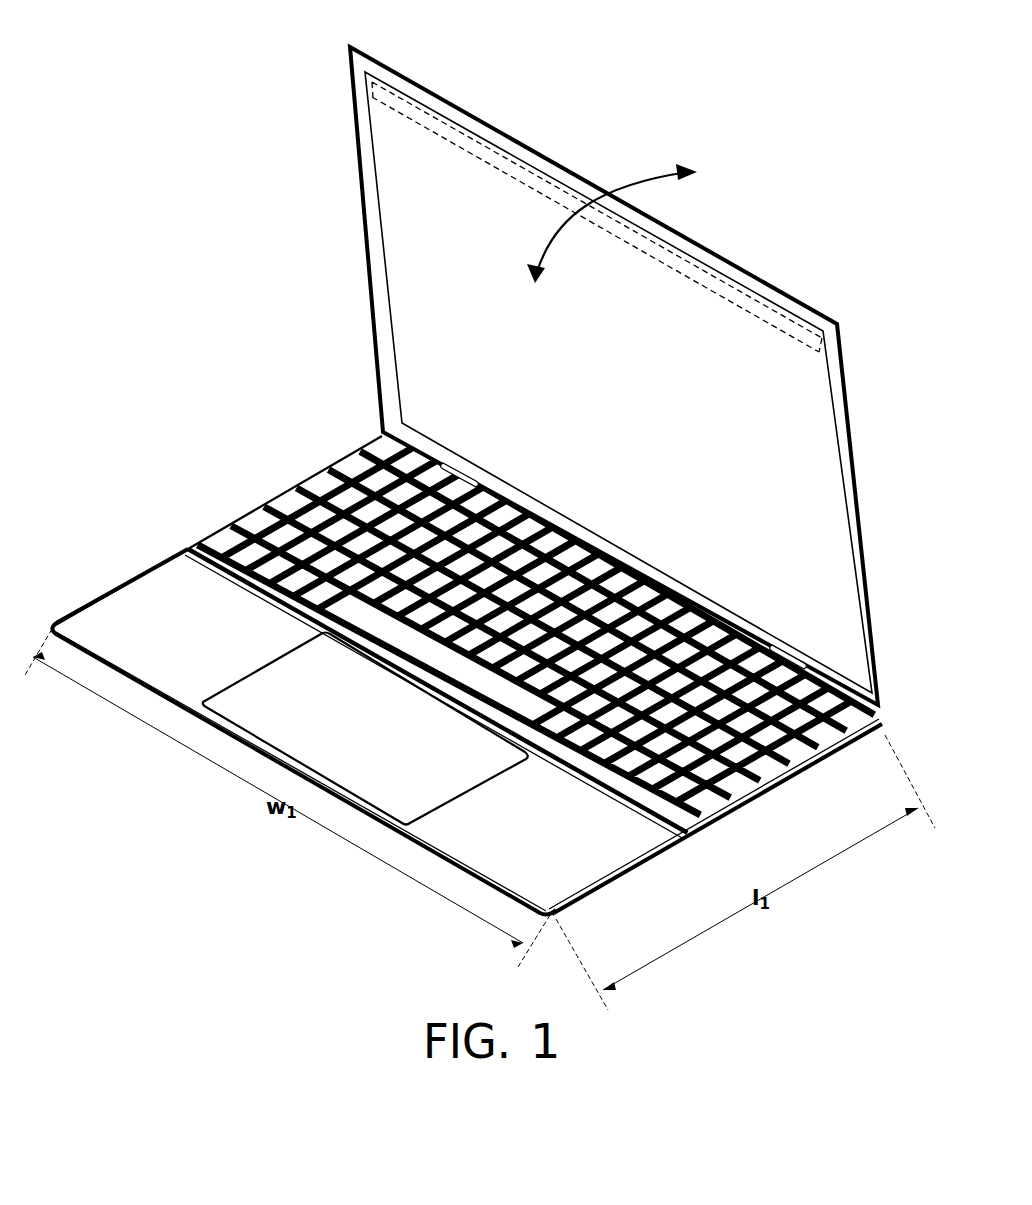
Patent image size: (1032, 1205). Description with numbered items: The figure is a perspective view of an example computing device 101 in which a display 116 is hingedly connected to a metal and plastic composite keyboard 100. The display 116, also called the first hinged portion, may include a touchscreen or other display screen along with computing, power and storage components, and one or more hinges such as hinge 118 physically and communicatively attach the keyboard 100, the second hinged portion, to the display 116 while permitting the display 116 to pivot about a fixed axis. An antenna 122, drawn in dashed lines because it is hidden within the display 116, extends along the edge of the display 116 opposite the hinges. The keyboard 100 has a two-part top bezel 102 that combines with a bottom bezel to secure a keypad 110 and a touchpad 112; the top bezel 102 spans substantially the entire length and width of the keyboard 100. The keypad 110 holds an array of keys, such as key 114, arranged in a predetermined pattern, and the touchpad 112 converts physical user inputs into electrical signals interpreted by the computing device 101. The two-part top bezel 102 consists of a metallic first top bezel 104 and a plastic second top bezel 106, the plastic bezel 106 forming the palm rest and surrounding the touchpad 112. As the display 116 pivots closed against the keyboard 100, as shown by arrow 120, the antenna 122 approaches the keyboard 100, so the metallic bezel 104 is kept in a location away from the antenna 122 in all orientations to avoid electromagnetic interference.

The metal and plastic composite keyboard 100 is at (190, 470).
The computing device 101 is at (191, 200).
The two-part top bezel 102 is at (178, 528).
The metallic first top bezel 104 is at (693, 836).
The plastic second top bezel 106 is at (210, 640).
The keypad 110 is at (549, 640).
The touchpad 112 is at (384, 735).
The key 114 is at (753, 767).
The display 116 is at (624, 406).
The hinge 118 is at (786, 653).
The arrow 120 is at (638, 178).
The antenna 122 is at (513, 180).